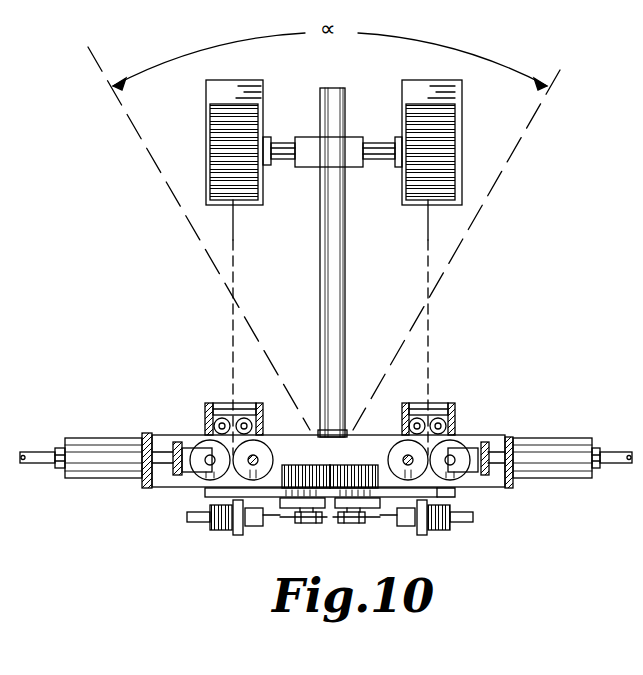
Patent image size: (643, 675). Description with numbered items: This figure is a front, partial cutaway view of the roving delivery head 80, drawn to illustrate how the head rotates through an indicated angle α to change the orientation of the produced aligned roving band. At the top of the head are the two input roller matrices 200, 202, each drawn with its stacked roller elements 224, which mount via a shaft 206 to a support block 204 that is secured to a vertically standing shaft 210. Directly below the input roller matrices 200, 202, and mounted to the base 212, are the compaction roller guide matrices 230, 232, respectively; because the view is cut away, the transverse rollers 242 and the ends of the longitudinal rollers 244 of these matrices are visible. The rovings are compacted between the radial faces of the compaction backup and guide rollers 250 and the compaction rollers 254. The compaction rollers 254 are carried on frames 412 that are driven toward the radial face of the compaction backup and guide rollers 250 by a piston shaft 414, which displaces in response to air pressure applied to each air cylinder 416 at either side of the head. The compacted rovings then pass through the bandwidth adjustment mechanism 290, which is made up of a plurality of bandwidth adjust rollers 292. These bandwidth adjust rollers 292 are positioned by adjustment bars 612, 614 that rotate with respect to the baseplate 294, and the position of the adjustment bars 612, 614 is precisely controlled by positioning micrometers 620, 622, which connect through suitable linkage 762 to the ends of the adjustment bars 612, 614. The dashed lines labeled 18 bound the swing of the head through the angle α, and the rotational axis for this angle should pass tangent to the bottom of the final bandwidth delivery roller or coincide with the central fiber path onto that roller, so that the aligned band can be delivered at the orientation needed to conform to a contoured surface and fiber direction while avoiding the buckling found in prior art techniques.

The cutting line / plane of view 18 is at (230, 258).
The roving delivery head 80 is at (522, 310).
The input roller matrix 200 is at (233, 90).
The input roller matrix 202 is at (427, 90).
The support block 204 is at (310, 158).
The shaft 206 is at (380, 160).
The vertically standing shaft 210 is at (346, 246).
The base 212 is at (152, 435).
The wheel fins 224 is at (223, 133).
The compaction roller guide matrix 230 is at (208, 413).
The compaction roller guide matrix 232 is at (480, 433).
The transverse rollers 242 is at (222, 402).
The longitudinal rollers 244 is at (237, 418).
The compaction backup and guide rollers 250 is at (258, 442).
The compaction rollers 254 is at (200, 478).
The bandwidth adjustment mechanism 290 is at (332, 467).
The bandwidth adjust rollers 292 is at (303, 466).
The baseplate 294 is at (456, 497).
The frames 412 is at (177, 472).
The piston shaft 414 is at (513, 437).
The air cylinder 416 is at (90, 440).
The adjustment bar 612 is at (316, 525).
The adjustment bar 614 is at (352, 525).
The positioning micrometer 620 is at (229, 533).
The positioning micrometer 622 is at (433, 535).
The linkage 762 is at (280, 525).